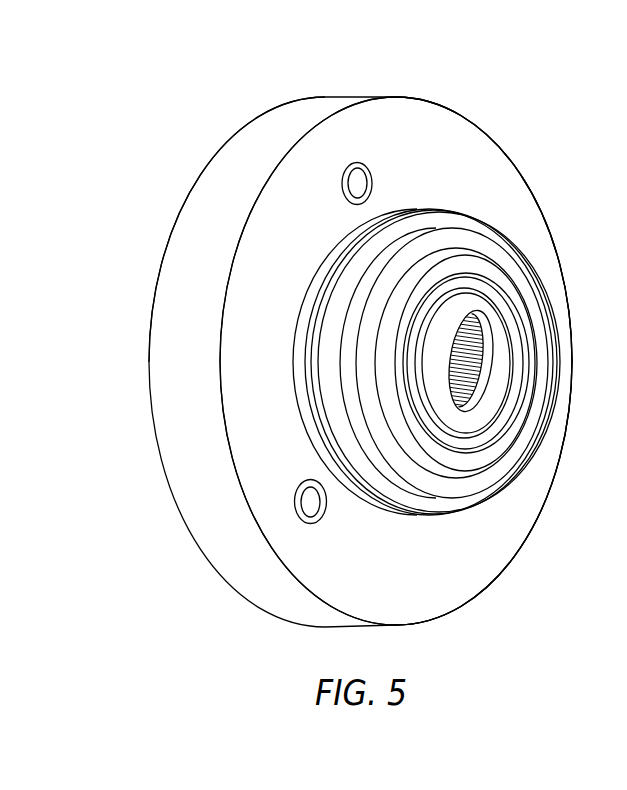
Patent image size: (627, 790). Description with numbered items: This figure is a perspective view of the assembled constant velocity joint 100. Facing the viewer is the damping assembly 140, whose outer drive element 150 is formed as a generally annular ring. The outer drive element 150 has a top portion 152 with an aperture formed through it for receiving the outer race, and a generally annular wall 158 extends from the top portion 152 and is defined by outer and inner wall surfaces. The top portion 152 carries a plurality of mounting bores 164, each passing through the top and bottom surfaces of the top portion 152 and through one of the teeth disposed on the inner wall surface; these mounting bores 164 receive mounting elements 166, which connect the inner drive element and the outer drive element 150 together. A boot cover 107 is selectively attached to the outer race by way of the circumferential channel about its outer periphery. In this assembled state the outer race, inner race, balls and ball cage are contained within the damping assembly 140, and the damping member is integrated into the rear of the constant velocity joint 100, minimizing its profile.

The constant velocity joint 100 is at (502, 588).
The boot cover 107 is at (537, 282).
The damping assembly 140 is at (190, 557).
The outer drive element 150 is at (527, 178).
The top portion 152 is at (418, 122).
The annular wall 158 is at (257, 132).
The mounting bores 164 is at (360, 165).
The mounting elements 166 is at (358, 183).